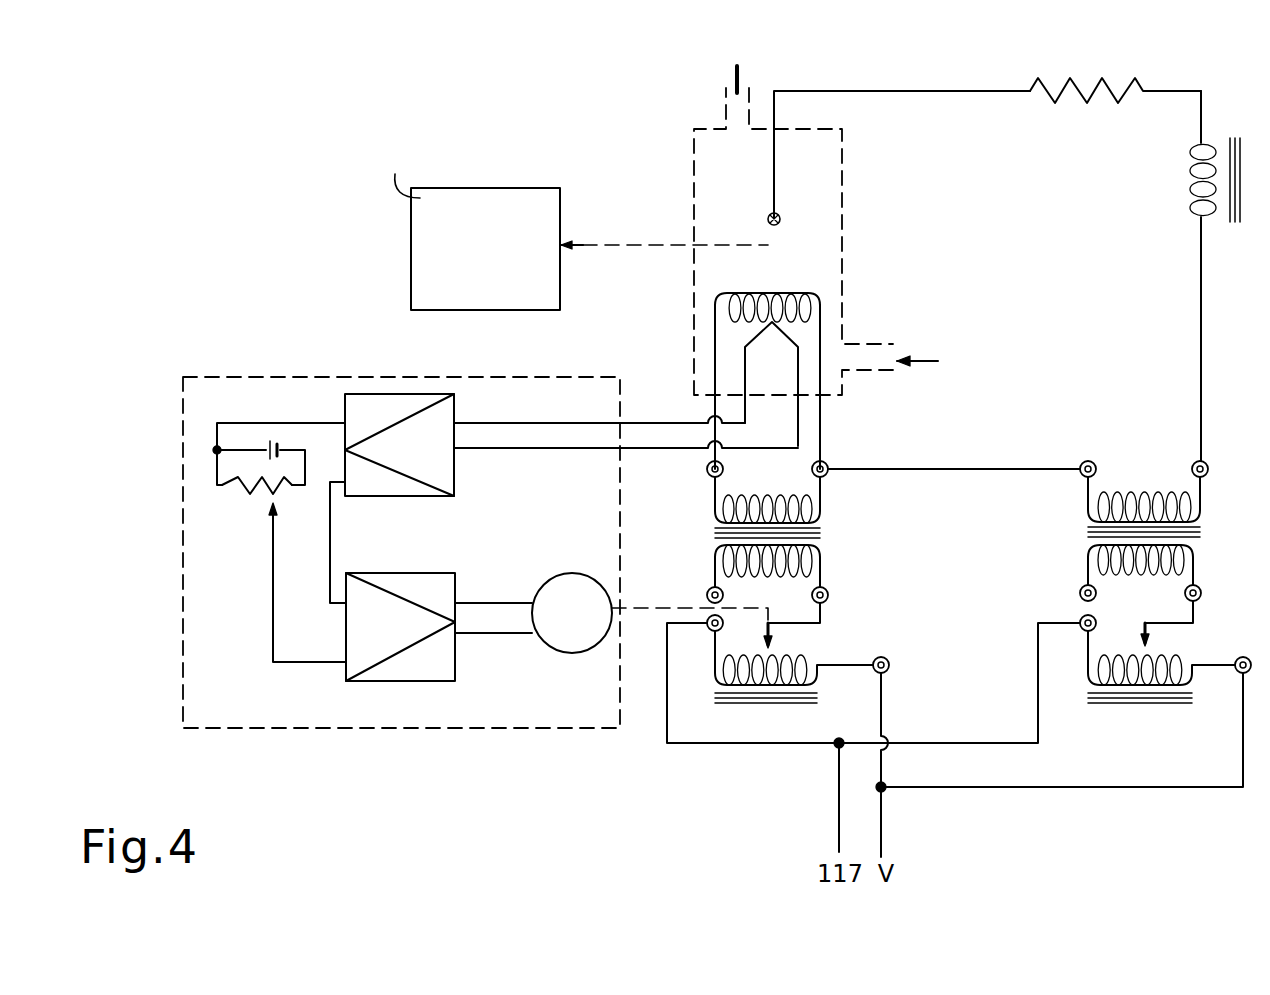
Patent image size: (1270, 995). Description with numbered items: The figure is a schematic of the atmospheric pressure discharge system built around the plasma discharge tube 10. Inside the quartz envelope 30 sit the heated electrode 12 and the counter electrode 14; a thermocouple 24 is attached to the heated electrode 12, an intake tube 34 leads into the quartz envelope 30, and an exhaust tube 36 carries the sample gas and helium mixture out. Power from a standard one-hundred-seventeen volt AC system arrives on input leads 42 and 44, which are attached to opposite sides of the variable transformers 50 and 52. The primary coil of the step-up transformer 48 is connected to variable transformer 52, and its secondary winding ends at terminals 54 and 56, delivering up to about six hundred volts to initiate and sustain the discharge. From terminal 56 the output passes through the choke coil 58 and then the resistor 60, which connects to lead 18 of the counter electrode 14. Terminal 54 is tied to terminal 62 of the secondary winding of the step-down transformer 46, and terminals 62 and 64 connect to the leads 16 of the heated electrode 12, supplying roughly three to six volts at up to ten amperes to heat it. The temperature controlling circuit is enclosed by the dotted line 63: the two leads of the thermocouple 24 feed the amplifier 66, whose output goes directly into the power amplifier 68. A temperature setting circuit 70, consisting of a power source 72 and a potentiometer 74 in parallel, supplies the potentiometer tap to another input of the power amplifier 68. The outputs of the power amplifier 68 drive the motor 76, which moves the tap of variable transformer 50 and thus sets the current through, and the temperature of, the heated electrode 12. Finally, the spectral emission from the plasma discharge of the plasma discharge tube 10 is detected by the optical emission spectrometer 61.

The plasma discharge tube 10 is at (676, 308).
The heated electrode 12 is at (765, 293).
The counter electrode 14 is at (770, 212).
The leads of heated electrode 16 is at (714, 360).
The lead of counter electrode 18 is at (780, 104).
The thermocouple 24 is at (772, 322).
The quartz envelope 30 is at (688, 140).
The intake tube 34 is at (886, 345).
The exhaust tube 36 is at (727, 91).
The input lead 42 is at (881, 818).
The input lead 44 is at (839, 803).
The step-down transformer 46 is at (712, 532).
The step-up transformer 48 is at (1088, 534).
The variable transformer 50 is at (800, 657).
The variable transformer 52 is at (1176, 660).
The terminal 54 is at (1083, 460).
The terminal 56 is at (1208, 463).
The choke coil 58 is at (1190, 189).
The resistor 60 is at (1108, 100).
The optical emission spectrometer 61 is at (418, 276).
The terminal 62 is at (831, 464).
The temperature controlling circuit 63 is at (488, 730).
The terminal 64 is at (706, 469).
The amplifier 66 is at (412, 496).
The power amplifier 68 is at (440, 681).
The temperature setting circuit 70 is at (235, 505).
The power source 72 is at (290, 445).
The potentiometer 74 is at (286, 484).
The motor 76 is at (567, 572).